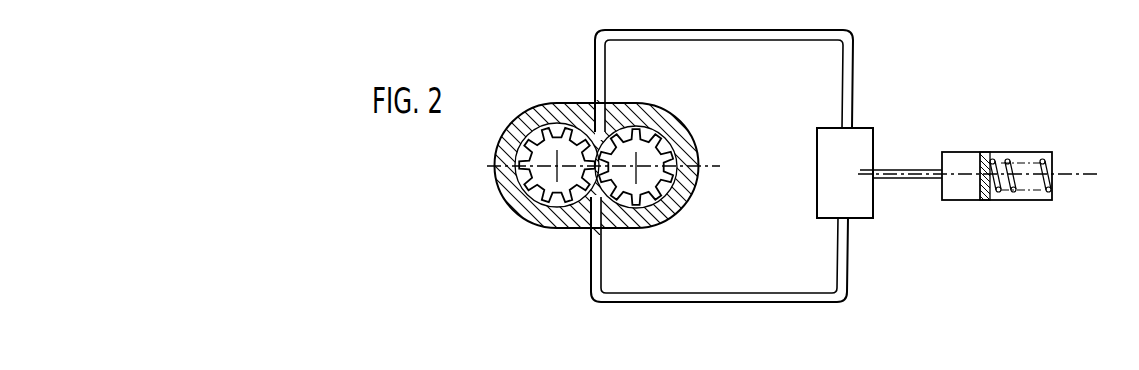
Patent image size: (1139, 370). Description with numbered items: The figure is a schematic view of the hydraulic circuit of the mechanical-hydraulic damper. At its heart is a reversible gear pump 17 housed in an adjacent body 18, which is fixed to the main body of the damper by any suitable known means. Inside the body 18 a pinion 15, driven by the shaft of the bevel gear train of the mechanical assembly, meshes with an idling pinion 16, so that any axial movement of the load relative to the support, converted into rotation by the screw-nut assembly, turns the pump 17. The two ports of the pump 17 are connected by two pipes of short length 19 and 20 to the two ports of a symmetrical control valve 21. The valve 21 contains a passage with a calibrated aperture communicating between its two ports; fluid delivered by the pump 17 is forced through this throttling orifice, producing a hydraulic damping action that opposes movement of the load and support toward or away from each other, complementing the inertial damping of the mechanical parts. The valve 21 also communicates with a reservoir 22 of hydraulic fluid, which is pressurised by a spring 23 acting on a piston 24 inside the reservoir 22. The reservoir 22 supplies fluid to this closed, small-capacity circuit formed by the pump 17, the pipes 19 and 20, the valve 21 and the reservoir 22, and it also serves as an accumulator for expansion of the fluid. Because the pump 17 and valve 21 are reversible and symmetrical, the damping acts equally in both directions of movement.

The pinion 15 is at (643, 181).
The idling pinion 16 is at (552, 183).
The gear pump 17 is at (590, 167).
The adjacent body 18 is at (556, 112).
The pipe 19 is at (715, 301).
The pipe 20 is at (727, 36).
The control valve 21 is at (865, 145).
The reservoir 22 is at (1012, 187).
The spring 23 is at (1050, 168).
The piston 24 is at (984, 152).